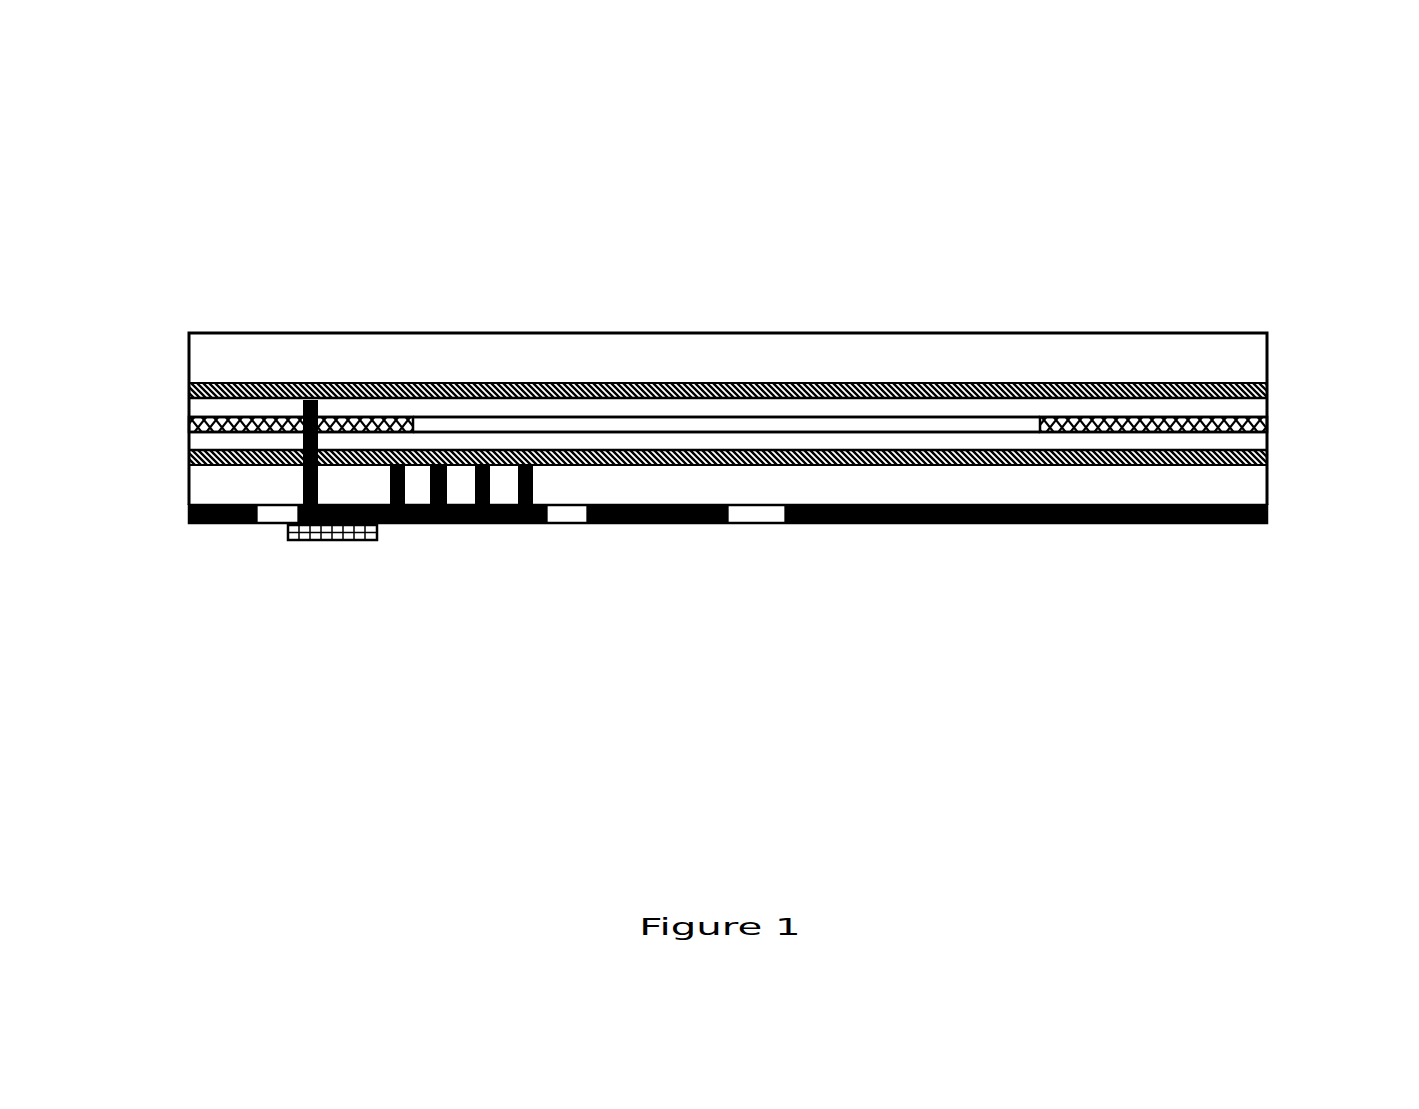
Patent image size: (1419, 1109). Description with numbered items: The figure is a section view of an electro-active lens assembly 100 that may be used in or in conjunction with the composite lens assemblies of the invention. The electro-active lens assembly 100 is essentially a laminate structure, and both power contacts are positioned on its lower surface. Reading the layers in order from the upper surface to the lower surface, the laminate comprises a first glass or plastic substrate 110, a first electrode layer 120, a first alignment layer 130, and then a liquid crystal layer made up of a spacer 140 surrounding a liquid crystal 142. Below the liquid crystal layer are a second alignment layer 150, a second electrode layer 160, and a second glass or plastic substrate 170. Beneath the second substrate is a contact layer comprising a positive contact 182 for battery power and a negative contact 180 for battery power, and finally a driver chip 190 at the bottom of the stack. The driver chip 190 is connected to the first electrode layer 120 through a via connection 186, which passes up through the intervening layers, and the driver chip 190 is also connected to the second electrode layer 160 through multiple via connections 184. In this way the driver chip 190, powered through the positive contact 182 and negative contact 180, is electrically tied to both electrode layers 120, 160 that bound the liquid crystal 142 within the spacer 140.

The electro-active lens assembly 100 is at (1315, 764).
The first glass or plastic substrate 110 is at (247, 343).
The first electrode layer 120 is at (390, 385).
The first alignment layer 130 is at (528, 410).
The spacer 140 is at (1040, 420).
The liquid crystal 142 is at (633, 425).
The second alignment layer 150 is at (1100, 438).
The second electrode layer 160 is at (1165, 450).
The second glass or plastic substrate 170 is at (1198, 485).
The negative contact for battery power 180 is at (1205, 520).
The positive contact for battery power 182 is at (680, 523).
The multiple via connections 184 is at (445, 487).
The via connection 186 is at (302, 479).
The driver chip 190 is at (338, 538).